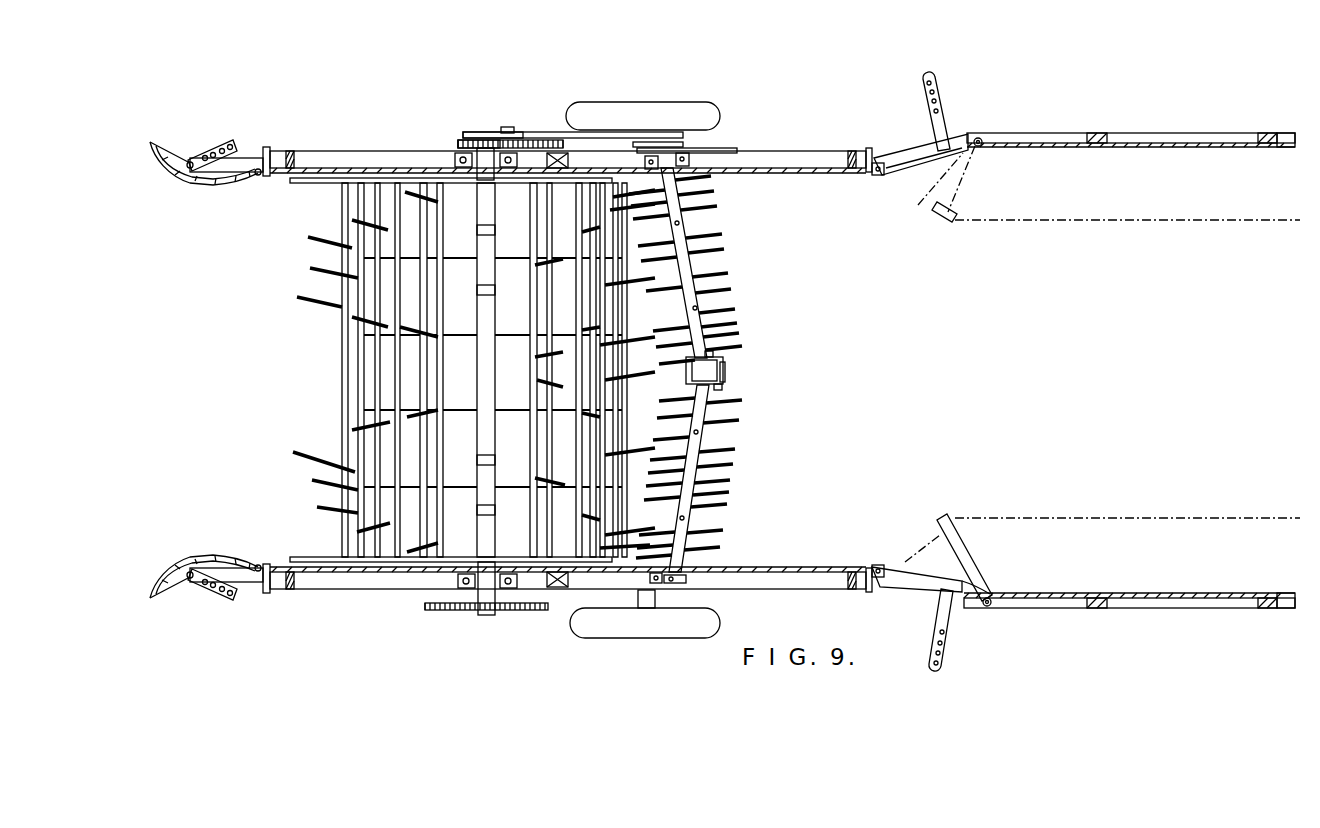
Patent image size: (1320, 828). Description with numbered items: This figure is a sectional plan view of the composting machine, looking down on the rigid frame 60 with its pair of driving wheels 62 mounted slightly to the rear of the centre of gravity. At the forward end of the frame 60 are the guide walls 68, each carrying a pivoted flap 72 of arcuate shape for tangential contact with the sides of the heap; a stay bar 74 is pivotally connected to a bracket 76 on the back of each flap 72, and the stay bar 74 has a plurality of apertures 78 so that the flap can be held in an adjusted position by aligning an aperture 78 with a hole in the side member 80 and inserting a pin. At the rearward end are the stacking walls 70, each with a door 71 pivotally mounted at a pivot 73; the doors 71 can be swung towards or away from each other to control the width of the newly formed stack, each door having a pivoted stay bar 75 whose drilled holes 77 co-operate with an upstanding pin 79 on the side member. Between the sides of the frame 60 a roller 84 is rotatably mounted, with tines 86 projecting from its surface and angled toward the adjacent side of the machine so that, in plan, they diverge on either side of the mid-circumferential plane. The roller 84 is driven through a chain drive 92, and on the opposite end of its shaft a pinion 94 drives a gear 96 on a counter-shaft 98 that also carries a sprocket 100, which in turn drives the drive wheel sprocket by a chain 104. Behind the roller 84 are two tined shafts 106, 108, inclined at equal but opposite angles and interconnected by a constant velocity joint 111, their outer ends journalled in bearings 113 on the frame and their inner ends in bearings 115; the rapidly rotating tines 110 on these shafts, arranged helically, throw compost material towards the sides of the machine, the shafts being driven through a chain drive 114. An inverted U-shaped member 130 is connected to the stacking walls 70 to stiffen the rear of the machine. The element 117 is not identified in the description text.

The rigid frame 60 is at (827, 158).
The driving wheels 62 is at (698, 110).
The guide walls 68 is at (210, 363).
The stacking walls 70 is at (1025, 133).
The door 71 is at (934, 212).
The pivoted flap 72 is at (213, 187).
The pivot 73 is at (875, 173).
The stay bar 74 is at (234, 141).
The pivoted stay bar 75 is at (942, 122).
The bracket 76 is at (188, 162).
The drilled holes 77 is at (930, 97).
The apertures 78 is at (221, 149).
The upstanding pin 79 is at (981, 146).
The side member 80 is at (247, 158).
The roller 84 is at (340, 345).
The tines 86 is at (299, 297).
The chain drive 92 is at (436, 609).
The pinion 94 is at (480, 131).
The gear 96 is at (538, 139).
The counter-shaft 98 is at (507, 127).
The sprocket 100 is at (461, 140).
The chain 104 is at (614, 131).
The shaft 106 is at (685, 212).
The shaft 108 is at (690, 514).
The tines 110 is at (710, 262).
The constant velocity joint 111 is at (724, 370).
The bearings 113 is at (684, 583).
The chain drive 114 is at (729, 147).
The bearings 115 is at (714, 356).
The flange 117 is at (725, 381).
The inverted U-shaped member 130 is at (1258, 130).